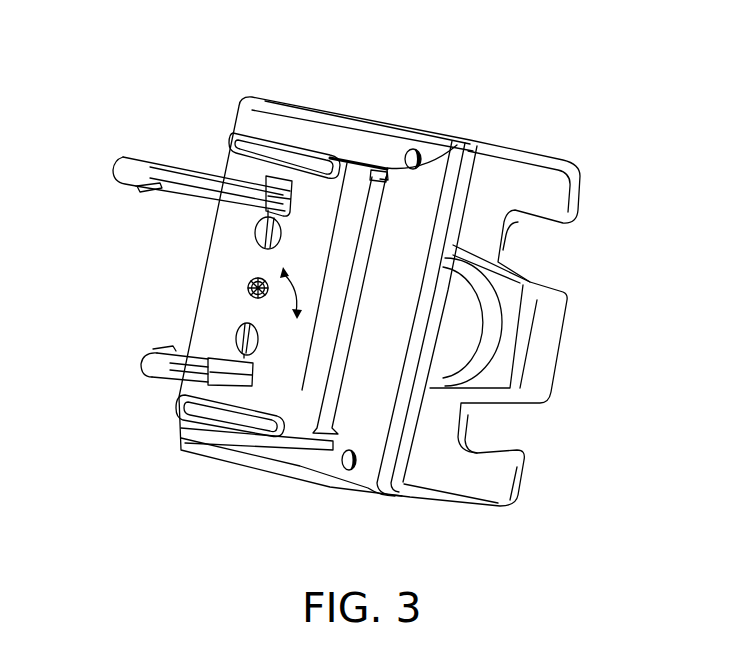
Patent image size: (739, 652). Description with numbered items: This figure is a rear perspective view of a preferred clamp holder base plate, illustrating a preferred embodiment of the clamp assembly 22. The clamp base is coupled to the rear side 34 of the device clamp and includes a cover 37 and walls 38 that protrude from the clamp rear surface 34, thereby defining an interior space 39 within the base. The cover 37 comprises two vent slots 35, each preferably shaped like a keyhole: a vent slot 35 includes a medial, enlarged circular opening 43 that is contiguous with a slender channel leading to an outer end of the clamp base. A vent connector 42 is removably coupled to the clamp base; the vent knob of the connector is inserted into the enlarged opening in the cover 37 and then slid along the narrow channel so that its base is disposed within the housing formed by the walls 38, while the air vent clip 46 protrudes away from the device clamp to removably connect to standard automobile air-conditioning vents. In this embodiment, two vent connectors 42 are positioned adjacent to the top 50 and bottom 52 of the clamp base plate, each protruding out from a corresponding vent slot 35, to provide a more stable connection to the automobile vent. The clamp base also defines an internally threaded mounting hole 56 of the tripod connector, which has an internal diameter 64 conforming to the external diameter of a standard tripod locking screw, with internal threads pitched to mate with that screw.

The clamp assembly 22 is at (178, 44).
The rear side 34 is at (380, 422).
The vent slot 35 is at (292, 229).
The cover 37 is at (210, 308).
The walls 38 is at (468, 141).
The interior space 39 is at (343, 243).
The vent connector 42 is at (118, 166).
The enlarged circular opening 43 is at (238, 337).
The air vent clip 46 is at (177, 162).
The top 50 is at (357, 117).
The bottom 52 is at (246, 467).
The mounting hole 56 is at (247, 280).
The internal diameter 64 is at (291, 308).